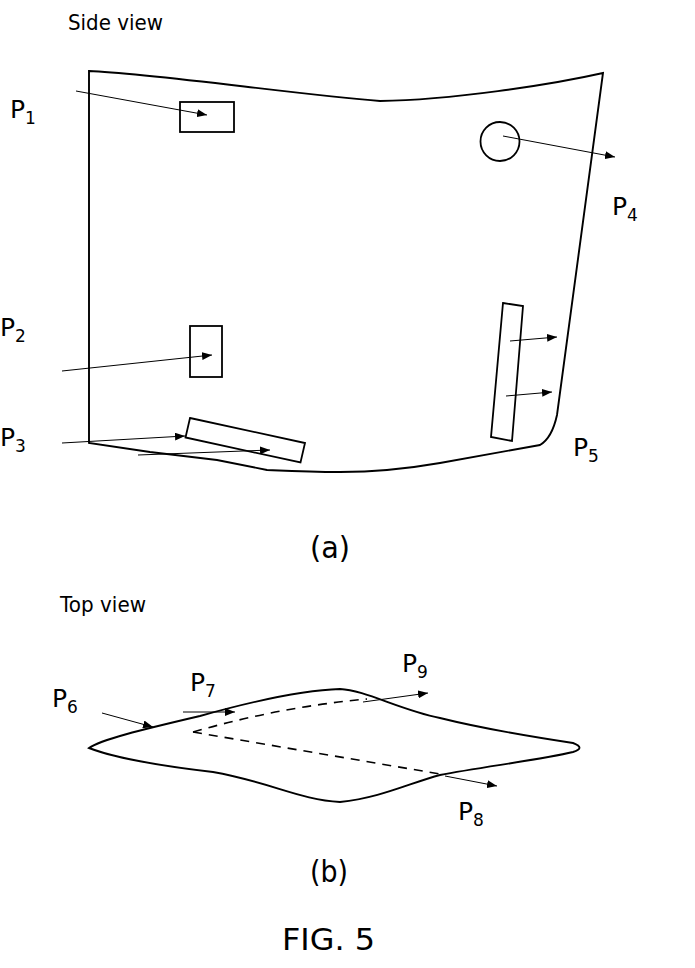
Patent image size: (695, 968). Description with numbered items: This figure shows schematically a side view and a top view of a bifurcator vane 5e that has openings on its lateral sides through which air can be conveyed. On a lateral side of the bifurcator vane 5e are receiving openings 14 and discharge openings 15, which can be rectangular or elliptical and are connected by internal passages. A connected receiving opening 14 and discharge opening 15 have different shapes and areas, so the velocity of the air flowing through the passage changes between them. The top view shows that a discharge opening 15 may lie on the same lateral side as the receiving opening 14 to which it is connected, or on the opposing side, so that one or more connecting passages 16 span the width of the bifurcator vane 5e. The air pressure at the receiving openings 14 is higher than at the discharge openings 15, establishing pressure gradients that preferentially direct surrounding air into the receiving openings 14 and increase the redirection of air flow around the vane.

The bifurcator vane 5e is at (403, 111).
The receiving opening 14 is at (235, 111).
The discharge opening 15 is at (500, 127).
The connecting passage 16 is at (297, 752).